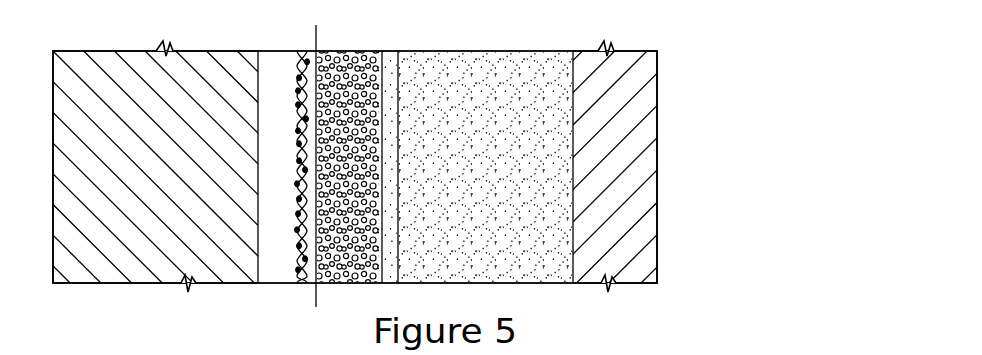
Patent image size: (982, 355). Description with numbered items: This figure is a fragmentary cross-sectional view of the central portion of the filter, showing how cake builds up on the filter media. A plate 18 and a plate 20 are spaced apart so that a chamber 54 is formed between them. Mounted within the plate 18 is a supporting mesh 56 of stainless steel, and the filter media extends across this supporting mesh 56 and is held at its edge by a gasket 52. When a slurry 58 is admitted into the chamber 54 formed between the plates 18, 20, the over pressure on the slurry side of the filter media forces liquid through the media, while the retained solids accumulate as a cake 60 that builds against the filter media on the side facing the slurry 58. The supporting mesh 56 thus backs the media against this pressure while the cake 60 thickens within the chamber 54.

The plate 18 is at (110, 63).
The plate 20 is at (642, 104).
The gasket 52 is at (317, 33).
The chamber 54 is at (523, 148).
The supporting mesh 56 is at (296, 52).
The slurry 58 is at (505, 82).
The cake 60 is at (357, 70).